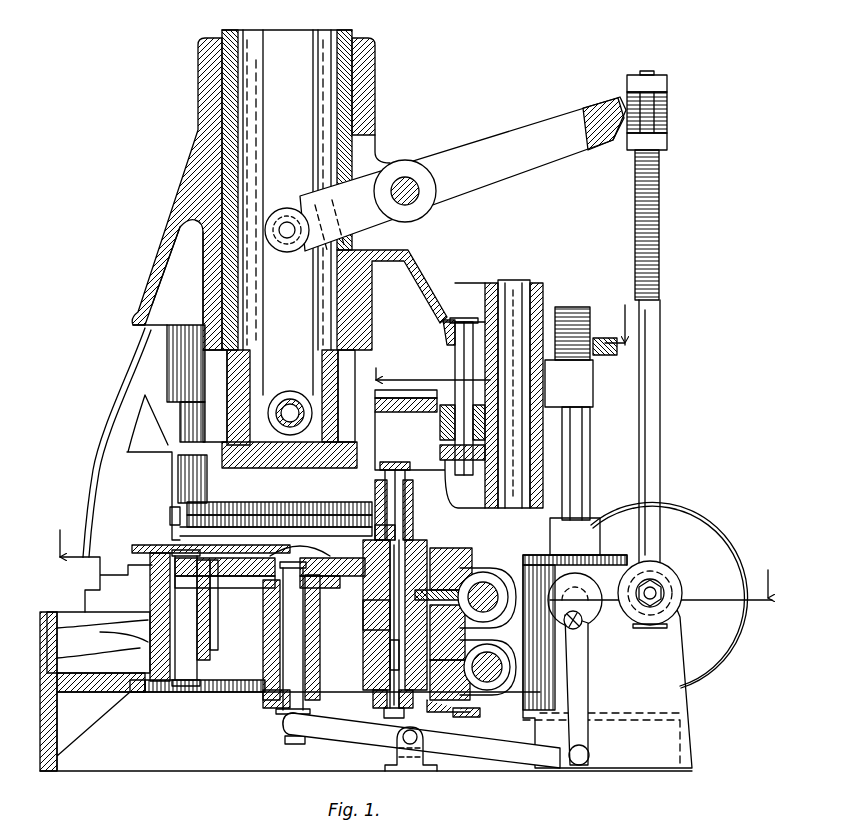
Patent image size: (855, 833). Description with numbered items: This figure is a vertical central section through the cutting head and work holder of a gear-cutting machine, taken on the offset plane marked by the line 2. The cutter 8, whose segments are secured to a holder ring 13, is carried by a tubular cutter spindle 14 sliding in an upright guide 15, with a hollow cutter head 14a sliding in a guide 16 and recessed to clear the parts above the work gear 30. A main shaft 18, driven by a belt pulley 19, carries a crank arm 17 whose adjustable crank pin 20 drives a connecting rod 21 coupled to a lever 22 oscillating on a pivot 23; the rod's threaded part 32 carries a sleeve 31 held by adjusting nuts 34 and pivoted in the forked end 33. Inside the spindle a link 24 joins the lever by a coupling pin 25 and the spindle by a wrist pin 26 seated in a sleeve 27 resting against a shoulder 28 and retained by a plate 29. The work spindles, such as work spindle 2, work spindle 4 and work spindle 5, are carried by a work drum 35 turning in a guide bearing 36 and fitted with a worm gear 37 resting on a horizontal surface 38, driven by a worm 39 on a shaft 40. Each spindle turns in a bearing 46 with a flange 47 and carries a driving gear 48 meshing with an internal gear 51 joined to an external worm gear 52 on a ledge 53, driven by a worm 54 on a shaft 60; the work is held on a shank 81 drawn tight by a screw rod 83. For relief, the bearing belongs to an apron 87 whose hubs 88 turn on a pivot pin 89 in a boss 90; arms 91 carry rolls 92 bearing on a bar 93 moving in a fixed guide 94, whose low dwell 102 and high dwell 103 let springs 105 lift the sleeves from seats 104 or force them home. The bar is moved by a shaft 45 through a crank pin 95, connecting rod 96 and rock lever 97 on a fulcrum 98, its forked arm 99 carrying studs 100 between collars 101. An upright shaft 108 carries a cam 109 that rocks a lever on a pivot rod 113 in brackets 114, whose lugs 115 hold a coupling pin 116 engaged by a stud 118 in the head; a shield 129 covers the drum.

The cutter spindle 14 is at (223, 137).
The upright guide 15 is at (217, 207).
The guide 16 is at (167, 348).
The shoulder 28 is at (240, 370).
The link 24 is at (280, 293).
The coupling pin 25 is at (287, 228).
The pivot 23 is at (405, 185).
The lever 22 is at (495, 142).
The forked end 33 is at (613, 102).
The adjusting nuts 34 is at (660, 138).
The sleeve 31 is at (660, 112).
The threaded part 32 is at (658, 197).
The connecting rod 21 is at (662, 375).
The pivot rod 113 is at (513, 290).
The brackets 114 is at (490, 508).
The arms or lugs 115 is at (445, 327).
The coupling pin 116 is at (463, 322).
The stud 118 is at (472, 380).
The cam 109 is at (598, 343).
The upright shaft 108 is at (580, 470).
The work spindle 4 is at (496, 332).
The sleeve 27 is at (247, 445).
The wrist pin 26 is at (290, 416).
The plate 29 is at (310, 450).
The gear 30 is at (373, 513).
The stem or shank 81 is at (412, 500).
The cutter head 14a is at (178, 458).
The holder ring 13 is at (170, 516).
The cutter 8 is at (200, 532).
The shield 129 is at (260, 556).
The work spindle 2 is at (411, 555).
The bearing hubs 88 is at (163, 690).
The pivot pin 89 is at (188, 663).
The boss 90 is at (215, 635).
The apron or holder 87 is at (383, 607).
The low dwell 102 is at (280, 557).
The high dwell 103 is at (283, 570).
The bar 93 is at (283, 620).
The fixed guide 94 is at (270, 655).
The arms 91 is at (360, 557).
The rolls 92 is at (315, 567).
The studs 100 is at (280, 722).
The collars or shoulders 101 is at (280, 735).
The forked arm 99 is at (310, 738).
The worm gear 37 is at (148, 600).
The horizontal surface 38 is at (148, 628).
The work drum 35 is at (135, 645).
The guide bearing 36 is at (57, 683).
The external worm gear 52 is at (130, 690).
The ledge 53 is at (132, 700).
The internal gear 51 is at (232, 692).
The work spindle 5 is at (375, 640).
The bearing 46 is at (380, 620).
The screw rod 83 is at (390, 650).
The flange 47 is at (425, 565).
The springs 105 is at (438, 580).
The semi-cylindrical seats 104 is at (470, 545).
The driving gear 48 is at (428, 688).
The worm 39 is at (480, 585).
The shaft 40 is at (495, 585).
The worm 54 is at (490, 650).
The shaft 60 is at (492, 685).
The shaft 45 is at (607, 661).
The crank pin 20 is at (672, 582).
The main shaft 18 is at (644, 616).
The crank arm 17 is at (667, 622).
The belt pulley 19 is at (712, 522).
The connecting rod 96 is at (588, 690).
The crank pin 95 is at (582, 626).
The rock lever 97 is at (467, 747).
The stationary fulcrum 98 is at (404, 731).